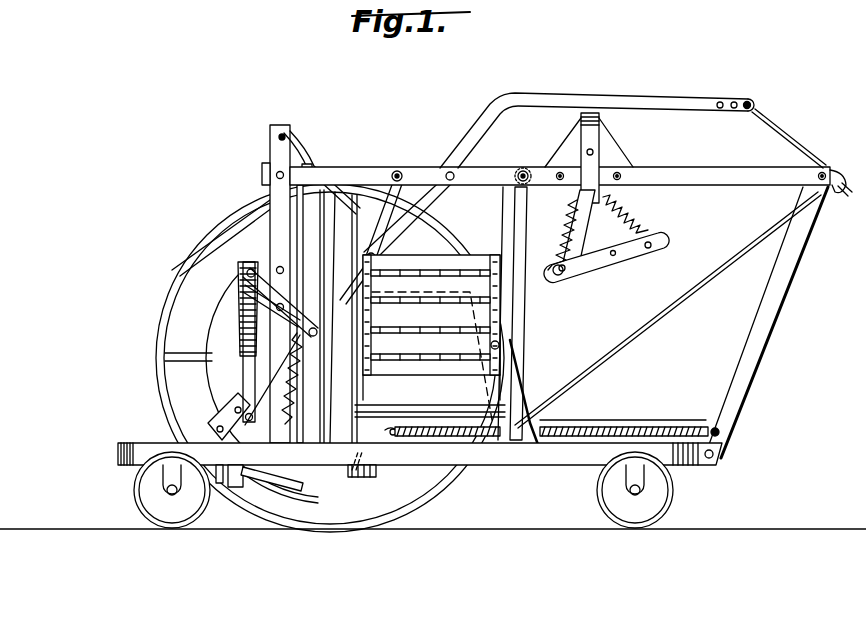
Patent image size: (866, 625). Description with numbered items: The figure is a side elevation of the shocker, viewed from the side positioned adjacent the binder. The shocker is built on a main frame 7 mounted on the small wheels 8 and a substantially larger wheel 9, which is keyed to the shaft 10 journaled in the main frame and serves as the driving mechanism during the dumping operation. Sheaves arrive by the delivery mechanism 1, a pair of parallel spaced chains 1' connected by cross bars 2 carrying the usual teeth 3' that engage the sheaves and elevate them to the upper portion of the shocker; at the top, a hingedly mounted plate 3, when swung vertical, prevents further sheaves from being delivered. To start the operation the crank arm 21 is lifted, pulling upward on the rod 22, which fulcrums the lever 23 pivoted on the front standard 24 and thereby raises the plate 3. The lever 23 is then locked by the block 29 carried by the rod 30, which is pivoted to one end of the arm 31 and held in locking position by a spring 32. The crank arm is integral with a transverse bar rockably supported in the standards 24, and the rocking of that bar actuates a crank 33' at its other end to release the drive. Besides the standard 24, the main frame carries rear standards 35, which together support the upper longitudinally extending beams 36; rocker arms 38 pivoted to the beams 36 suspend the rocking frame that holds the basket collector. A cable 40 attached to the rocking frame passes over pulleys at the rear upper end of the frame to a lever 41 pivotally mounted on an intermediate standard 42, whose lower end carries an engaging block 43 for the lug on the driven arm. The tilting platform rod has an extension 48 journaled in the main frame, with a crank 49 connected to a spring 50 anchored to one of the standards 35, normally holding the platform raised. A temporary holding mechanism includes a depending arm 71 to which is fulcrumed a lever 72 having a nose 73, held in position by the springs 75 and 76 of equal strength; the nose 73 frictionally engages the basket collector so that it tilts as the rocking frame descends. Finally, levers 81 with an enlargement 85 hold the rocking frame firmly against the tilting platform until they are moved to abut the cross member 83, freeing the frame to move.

The delivery mechanism 1 is at (461, 334).
The parallel spaced chains 1' is at (458, 355).
The cross bars 2 is at (473, 328).
The hingedly mounted plate 3 is at (430, 317).
The teeth 3' is at (430, 314).
The main frame 7 is at (538, 463).
The wheels 8 is at (132, 487).
The wheel 9 is at (196, 262).
The shaft 10 is at (599, 142).
The crank arm 21 is at (286, 138).
The rod 22 is at (297, 203).
The lever 23 is at (240, 327).
The standard 24 is at (270, 153).
The block 29 is at (243, 285).
The rod 30 is at (246, 265).
The arm 31 is at (228, 217).
The spring 32 is at (243, 363).
The crank 33' is at (322, 169).
The rear standards 35 is at (777, 303).
The upper longitudinally extending beams 36 is at (723, 173).
The rocker arms 38 is at (510, 228).
The cable 40 is at (790, 142).
The lever 41 is at (643, 103).
The intermediate standard 42 is at (370, 185).
The engaging block 43 is at (208, 422).
The extension 48 is at (363, 480).
The crank 49 is at (390, 428).
The spring 50 is at (445, 440).
The depending arm 71 is at (587, 232).
The lever 72 is at (600, 265).
The nose 73 is at (670, 242).
The spring 75 is at (570, 215).
The spring 76 is at (633, 213).
The levers 81 is at (212, 486).
The cross member 83 is at (243, 480).
The enlargement 85 is at (296, 483).